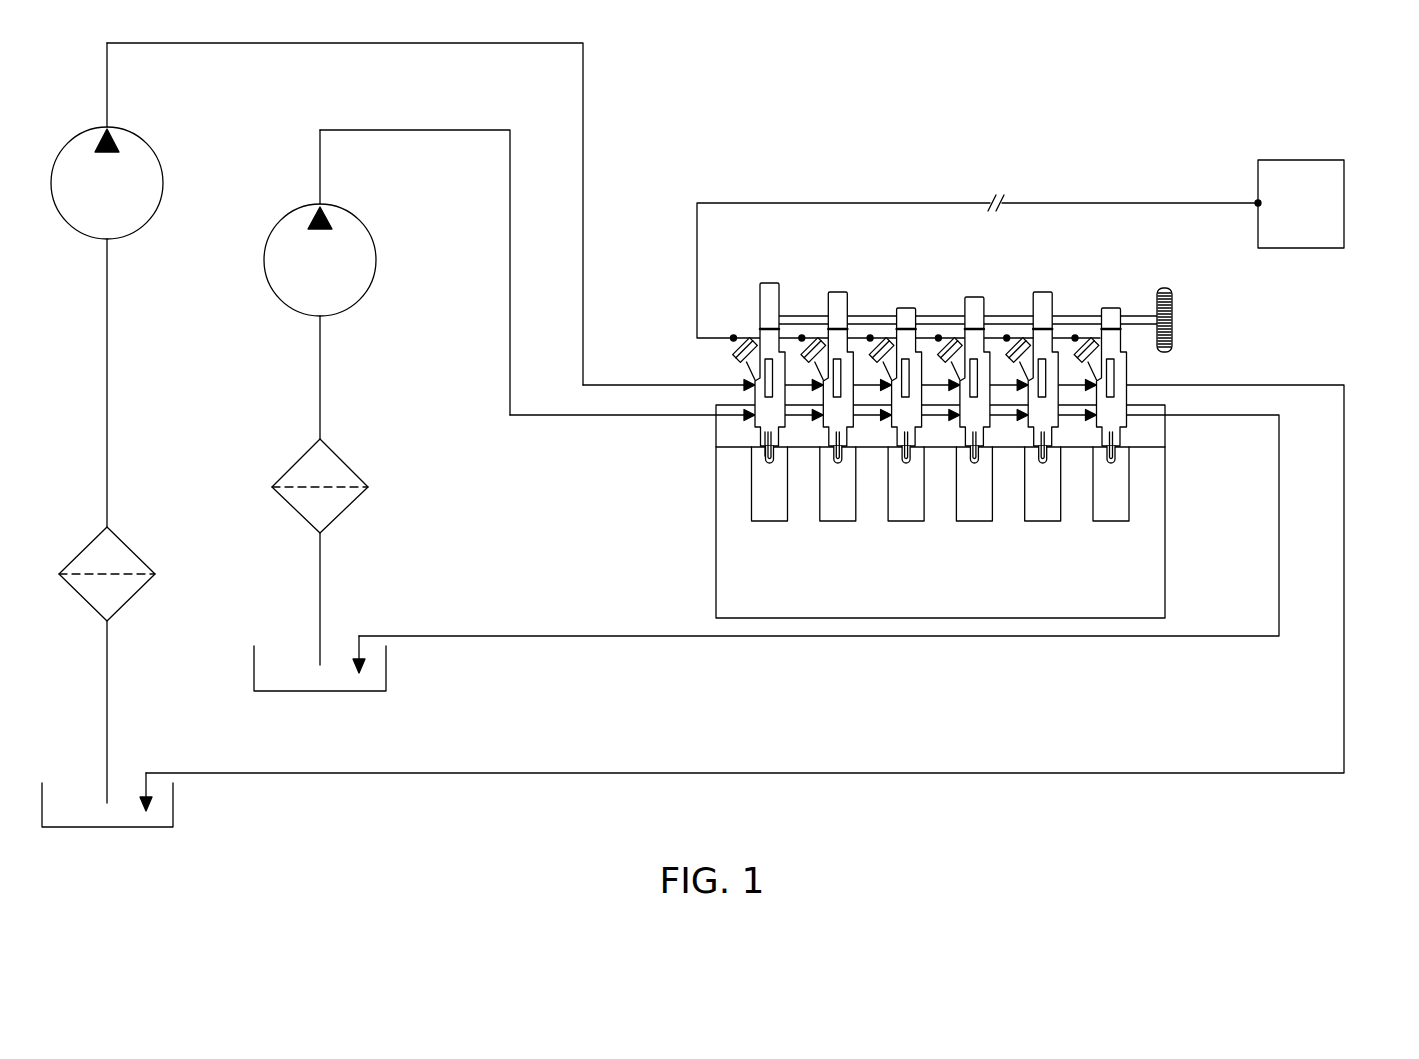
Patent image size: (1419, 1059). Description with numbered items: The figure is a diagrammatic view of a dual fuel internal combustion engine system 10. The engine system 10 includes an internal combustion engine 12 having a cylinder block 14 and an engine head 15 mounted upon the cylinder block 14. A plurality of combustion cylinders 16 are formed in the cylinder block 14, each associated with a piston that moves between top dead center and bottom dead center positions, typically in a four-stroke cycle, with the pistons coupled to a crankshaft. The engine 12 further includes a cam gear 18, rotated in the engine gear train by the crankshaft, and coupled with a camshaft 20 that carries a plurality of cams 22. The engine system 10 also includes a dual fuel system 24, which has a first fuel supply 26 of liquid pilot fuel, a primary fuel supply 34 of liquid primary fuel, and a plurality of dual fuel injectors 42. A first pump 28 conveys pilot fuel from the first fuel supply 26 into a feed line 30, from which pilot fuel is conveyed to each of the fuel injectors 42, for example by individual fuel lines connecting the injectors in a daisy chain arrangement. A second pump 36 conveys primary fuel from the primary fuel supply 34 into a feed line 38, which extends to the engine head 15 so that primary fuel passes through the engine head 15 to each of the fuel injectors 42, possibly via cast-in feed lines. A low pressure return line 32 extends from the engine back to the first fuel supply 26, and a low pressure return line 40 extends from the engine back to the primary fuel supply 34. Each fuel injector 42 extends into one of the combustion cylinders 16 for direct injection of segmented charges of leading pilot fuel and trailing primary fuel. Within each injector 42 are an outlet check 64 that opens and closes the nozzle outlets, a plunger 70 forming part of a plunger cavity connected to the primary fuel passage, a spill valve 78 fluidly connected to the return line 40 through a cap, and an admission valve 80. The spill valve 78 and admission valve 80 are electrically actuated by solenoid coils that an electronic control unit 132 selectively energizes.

The dual fuel internal combustion engine system 10 is at (1382, 88).
The internal combustion engine 12 is at (928, 511).
The cylinder block 14 is at (716, 566).
The engine head 15 is at (1166, 437).
The combustion cylinders 16 is at (766, 521).
The cam gear 18 is at (1163, 287).
The camshaft 20 is at (1062, 315).
The cams 22 is at (768, 283).
The dual fuel system 24 is at (632, 134).
The first fuel supply 26 is at (174, 792).
The first pump 28 is at (158, 140).
The feed line 30 is at (584, 324).
The low pressure return line 32 is at (735, 774).
The primary fuel supply 34 is at (387, 656).
The second pump 36 is at (372, 214).
The feed line 38 is at (514, 420).
The low pressure return line 40 is at (735, 637).
The dual fuel injectors 42 is at (780, 430).
The outlet check 64 is at (763, 432).
The plunger 70 is at (756, 393).
The spill valve 78 is at (732, 348).
The admission valve 80 is at (740, 367).
The electronic control unit 132 is at (1301, 160).